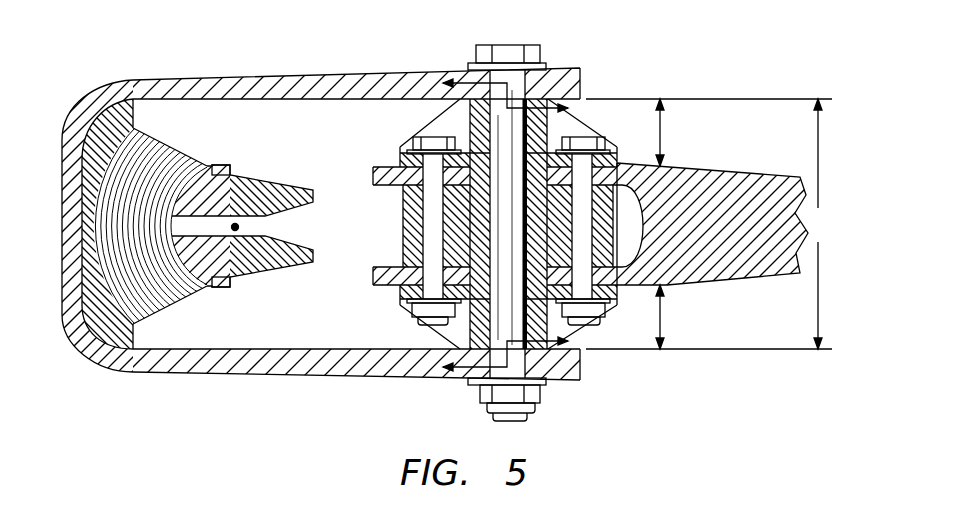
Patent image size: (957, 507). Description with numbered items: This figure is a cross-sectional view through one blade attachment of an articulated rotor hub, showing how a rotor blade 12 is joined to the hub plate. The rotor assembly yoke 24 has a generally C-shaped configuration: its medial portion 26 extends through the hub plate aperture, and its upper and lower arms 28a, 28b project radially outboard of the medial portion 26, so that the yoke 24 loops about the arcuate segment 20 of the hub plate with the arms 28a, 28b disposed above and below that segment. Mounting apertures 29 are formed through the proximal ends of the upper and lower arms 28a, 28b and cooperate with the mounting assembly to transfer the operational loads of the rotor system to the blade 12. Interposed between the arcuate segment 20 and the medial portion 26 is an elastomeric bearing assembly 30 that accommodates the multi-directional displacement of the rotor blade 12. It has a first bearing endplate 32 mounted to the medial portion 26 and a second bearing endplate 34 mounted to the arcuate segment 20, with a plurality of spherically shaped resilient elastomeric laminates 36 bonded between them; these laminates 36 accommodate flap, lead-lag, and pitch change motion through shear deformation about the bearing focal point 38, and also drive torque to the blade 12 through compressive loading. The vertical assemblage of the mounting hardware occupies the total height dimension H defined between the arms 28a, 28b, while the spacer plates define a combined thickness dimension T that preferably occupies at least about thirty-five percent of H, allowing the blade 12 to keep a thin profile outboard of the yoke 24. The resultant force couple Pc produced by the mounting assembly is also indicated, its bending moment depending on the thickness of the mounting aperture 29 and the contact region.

The rotor blade 12 is at (728, 192).
The arcuate segment 20 is at (478, 225).
The rotor assembly yoke 24 is at (478, 230).
The medial portion 26 is at (77, 307).
The upper arm 28a is at (316, 72).
The lower arm 28b is at (405, 381).
The mounting aperture 29 is at (526, 82).
The bearing assembly 30 is at (236, 225).
The first bearing endplate 32 is at (130, 337).
The second bearing endplate 34 is at (226, 293).
The elastomeric laminates 36 is at (220, 141).
The bearing focal point 38 is at (238, 227).
The resultant force couple Pc is at (452, 411).
The combined thickness dimension T is at (664, 124).
The total height dimension H is at (709, 224).